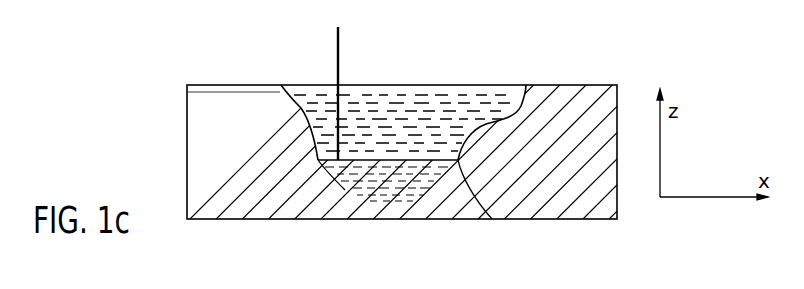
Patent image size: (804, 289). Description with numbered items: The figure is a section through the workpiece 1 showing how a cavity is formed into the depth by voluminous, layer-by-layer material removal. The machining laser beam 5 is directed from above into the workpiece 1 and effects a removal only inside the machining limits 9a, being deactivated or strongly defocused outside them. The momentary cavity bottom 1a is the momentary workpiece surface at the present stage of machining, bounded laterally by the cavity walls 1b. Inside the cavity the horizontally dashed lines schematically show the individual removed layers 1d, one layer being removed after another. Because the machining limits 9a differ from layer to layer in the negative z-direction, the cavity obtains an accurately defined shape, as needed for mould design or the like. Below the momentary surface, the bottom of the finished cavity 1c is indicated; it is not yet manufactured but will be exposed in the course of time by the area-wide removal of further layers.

The workpiece 1 is at (201, 132).
The momentary cavity bottom 1a is at (369, 158).
The cavity wall 1b is at (305, 126).
The bottom of the finished cavity 1c is at (375, 203).
The removed layers 1d is at (430, 100).
The machining laser beam 5 is at (336, 58).
The machining limits 9a is at (492, 219).